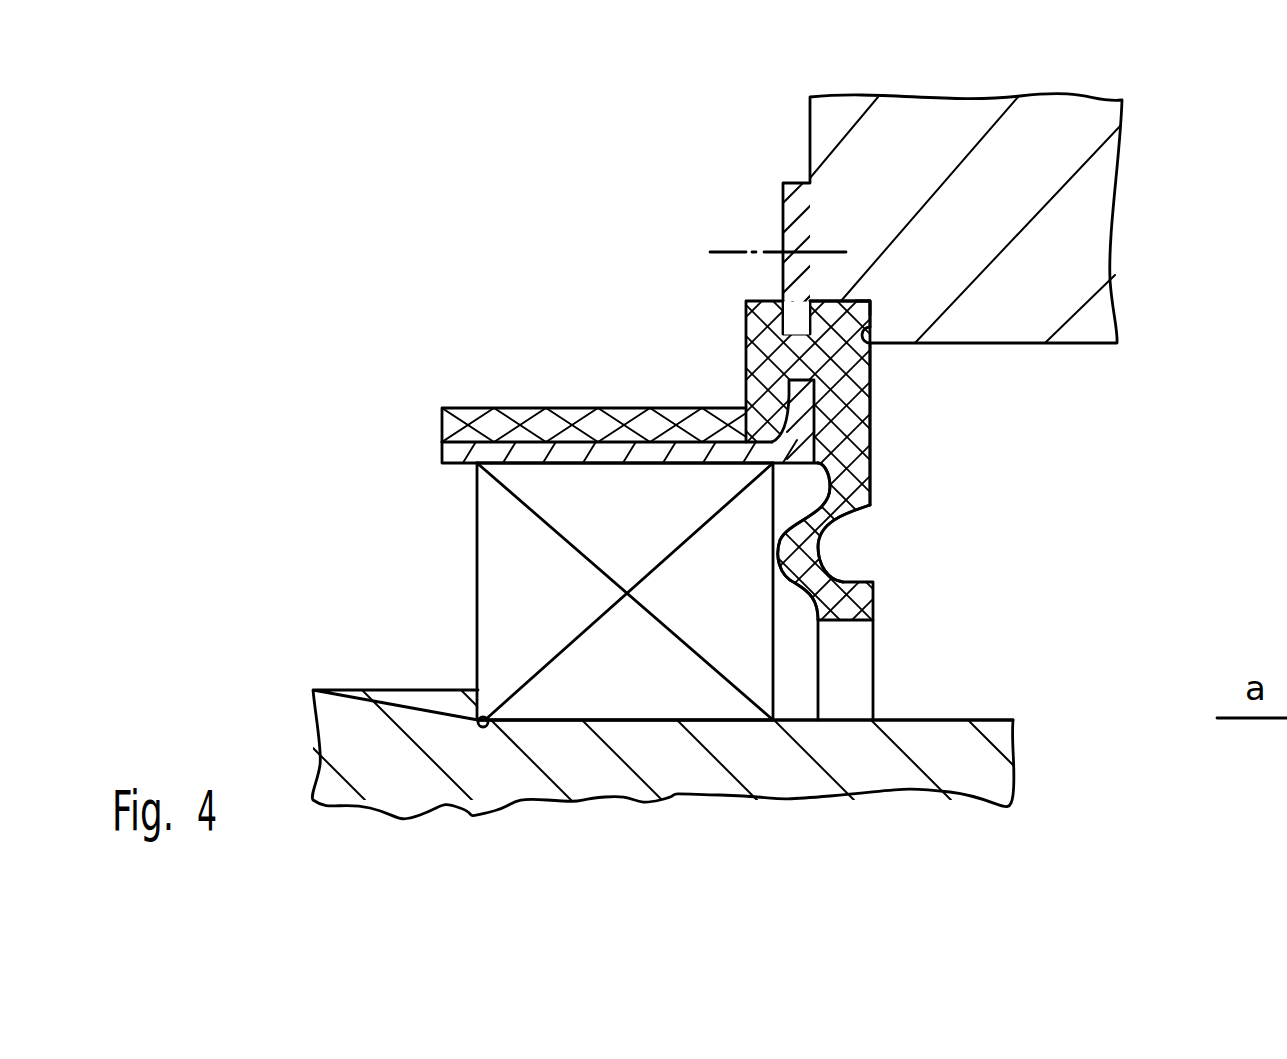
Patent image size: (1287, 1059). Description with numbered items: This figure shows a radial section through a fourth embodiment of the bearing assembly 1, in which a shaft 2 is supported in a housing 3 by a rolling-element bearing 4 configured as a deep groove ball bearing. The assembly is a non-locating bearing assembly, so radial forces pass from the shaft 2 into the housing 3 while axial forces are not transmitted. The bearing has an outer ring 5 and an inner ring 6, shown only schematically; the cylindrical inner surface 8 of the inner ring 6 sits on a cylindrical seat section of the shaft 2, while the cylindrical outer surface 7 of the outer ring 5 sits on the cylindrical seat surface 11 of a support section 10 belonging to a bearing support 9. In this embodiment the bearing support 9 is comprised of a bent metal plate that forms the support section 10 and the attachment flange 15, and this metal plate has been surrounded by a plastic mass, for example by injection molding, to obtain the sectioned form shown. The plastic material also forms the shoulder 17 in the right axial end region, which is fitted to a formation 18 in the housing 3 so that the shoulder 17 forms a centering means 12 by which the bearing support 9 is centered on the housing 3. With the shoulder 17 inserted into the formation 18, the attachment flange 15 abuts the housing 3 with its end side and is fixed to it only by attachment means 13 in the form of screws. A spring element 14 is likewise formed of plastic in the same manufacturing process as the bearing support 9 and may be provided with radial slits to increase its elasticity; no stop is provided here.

The bearing assembly 1 is at (408, 192).
The shaft 2 is at (958, 770).
The housing 3 is at (1102, 172).
The rolling-element bearing 4 is at (537, 578).
The outer ring 5 is at (553, 482).
The inner ring 6 is at (560, 708).
The cylindrical outer surface 7 is at (600, 457).
The cylindrical inner surface 8 is at (665, 723).
The bearing support 9 is at (870, 432).
The support section 10 is at (532, 458).
The cylindrical seat surface 11 is at (635, 475).
The centering means 12 is at (876, 351).
The attachment means 13 is at (725, 250).
The spring element 14 is at (818, 536).
The attachment flange 15 is at (801, 182).
The shoulder 17 is at (857, 298).
The formation 18 is at (870, 344).